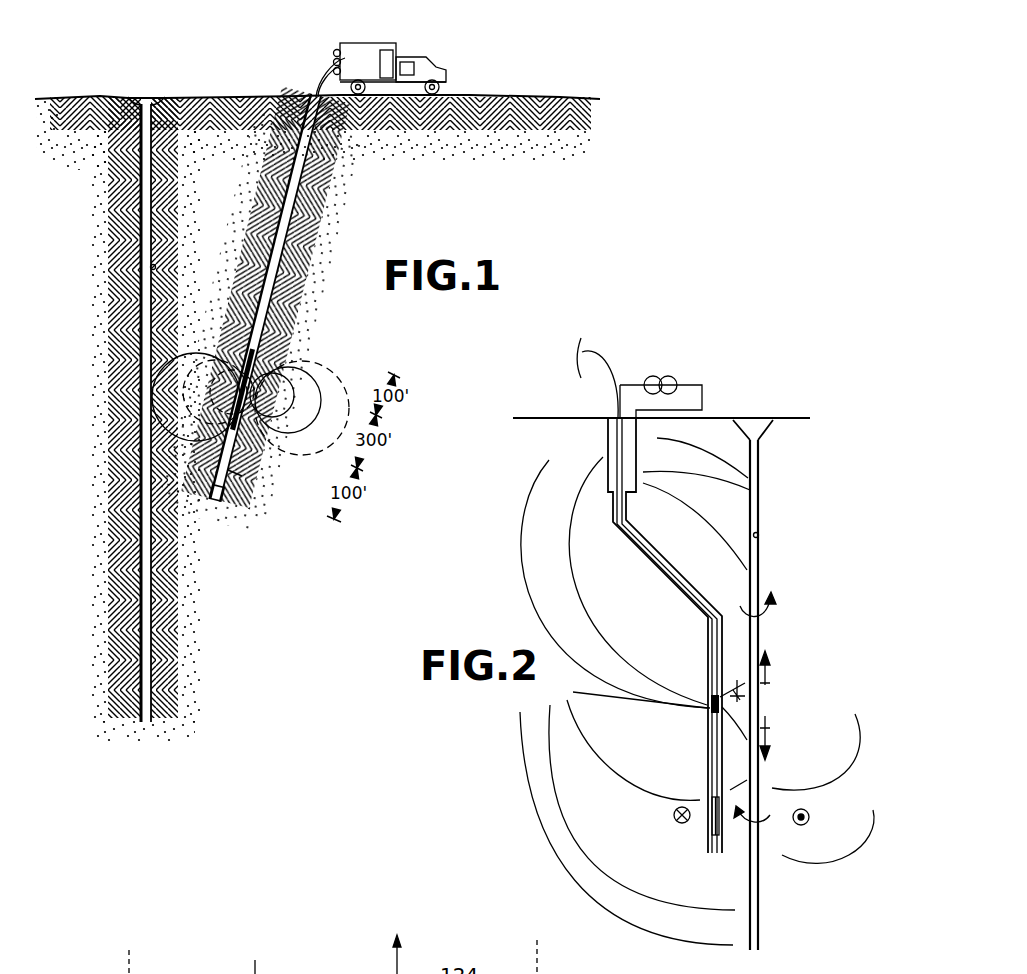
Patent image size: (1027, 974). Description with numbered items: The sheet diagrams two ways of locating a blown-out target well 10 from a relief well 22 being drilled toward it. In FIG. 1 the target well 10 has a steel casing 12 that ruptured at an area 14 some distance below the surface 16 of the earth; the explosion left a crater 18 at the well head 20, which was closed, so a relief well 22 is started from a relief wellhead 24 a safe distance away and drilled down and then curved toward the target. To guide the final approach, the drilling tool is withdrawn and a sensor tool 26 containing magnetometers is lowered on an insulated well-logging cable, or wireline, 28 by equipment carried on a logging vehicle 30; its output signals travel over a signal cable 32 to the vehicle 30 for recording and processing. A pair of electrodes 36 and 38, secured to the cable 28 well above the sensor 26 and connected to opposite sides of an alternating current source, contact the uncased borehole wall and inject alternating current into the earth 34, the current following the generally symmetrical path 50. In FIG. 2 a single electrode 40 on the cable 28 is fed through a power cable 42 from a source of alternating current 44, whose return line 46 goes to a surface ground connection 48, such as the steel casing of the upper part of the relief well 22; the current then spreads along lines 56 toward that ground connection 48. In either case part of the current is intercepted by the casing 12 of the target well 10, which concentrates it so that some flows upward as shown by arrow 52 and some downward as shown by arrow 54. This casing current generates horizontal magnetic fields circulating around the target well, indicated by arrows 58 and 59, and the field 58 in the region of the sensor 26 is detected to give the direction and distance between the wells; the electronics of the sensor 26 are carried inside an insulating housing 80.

In FIG. 1, the target well 10 is at (143, 387).
In FIG. 2, the target well 10 is at (780, 685).
In FIG. 1, the steel casing 12 is at (156, 268).
In FIG. 2, the steel casing 12 is at (760, 535).
In FIG. 1, the rupture area 14 is at (140, 210).
In FIG. 1, the earth surface 16 is at (220, 96).
In FIG. 2, the earth surface 16 is at (519, 417).
In FIG. 1, the crater 18 is at (138, 97).
In FIG. 1, the well head 20 is at (148, 88).
In FIG. 2, the well head 20 is at (758, 428).
In FIG. 1, the relief well 22 is at (281, 310).
In FIG. 2, the relief well 22 is at (663, 641).
In FIG. 1, the relief wellhead 24 is at (306, 95).
In FIG. 2, the relief wellhead 24 is at (607, 421).
In FIG. 1, the sensor tool 26 is at (209, 510).
In FIG. 2, the sensor tool 26 is at (708, 840).
In FIG. 1, the well-logging cable 28 is at (314, 80).
In FIG. 2, the well-logging cable 28 is at (612, 385).
In FIG. 1, the logging vehicle 30 is at (374, 42).
In FIG. 1, the signal cable 32 is at (321, 80).
In FIG. 1, the earth 34 is at (229, 249).
In FIG. 2, the earth 34 is at (652, 754).
In FIG. 1, the electrode 36 is at (268, 372).
In FIG. 1, the electrode 38 is at (258, 472).
In FIG. 2, the single electrode 40 is at (708, 698).
In FIG. 2, the power cable 42 is at (618, 388).
In FIG. 2, the source of alternating current 44 is at (652, 376).
In FIG. 2, the AC return line 46 is at (703, 405).
In FIG. 2, the ground connection 48 is at (632, 451).
In FIG. 1, the current path 50 is at (210, 338).
In FIG. 2, the upward current arrow 52 is at (770, 683).
In FIG. 2, the downward current arrow 54 is at (770, 728).
In FIG. 2, the current flow lines 56 is at (730, 448).
In FIG. 2, the magnetic field arrow 58 is at (775, 832).
In FIG. 2, the magnetic field arrow 59 is at (765, 614).
In FIG. 2, the housing 80 is at (737, 682).